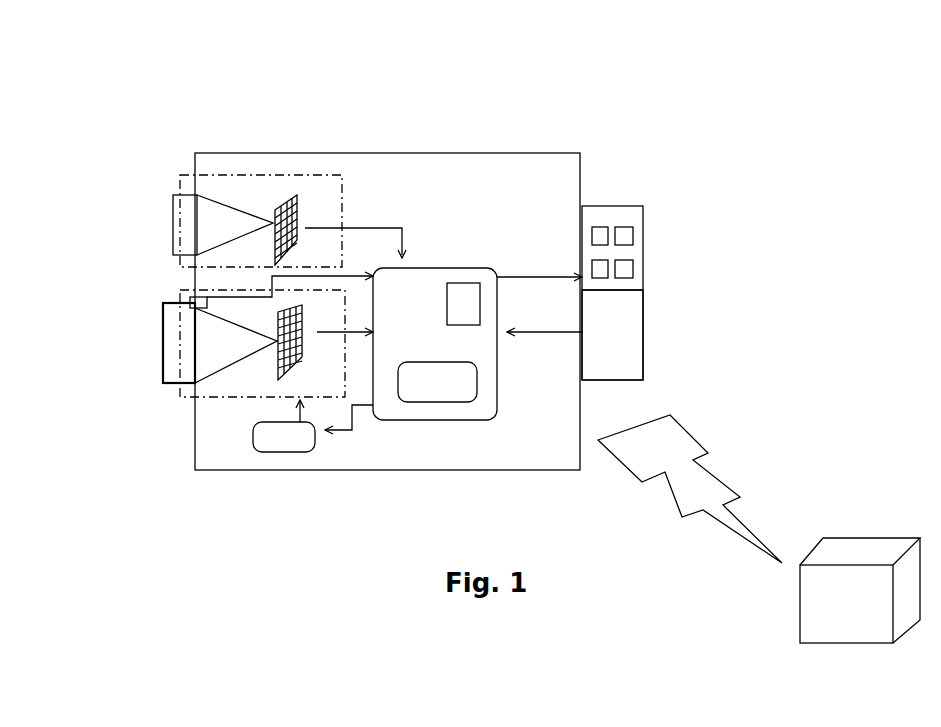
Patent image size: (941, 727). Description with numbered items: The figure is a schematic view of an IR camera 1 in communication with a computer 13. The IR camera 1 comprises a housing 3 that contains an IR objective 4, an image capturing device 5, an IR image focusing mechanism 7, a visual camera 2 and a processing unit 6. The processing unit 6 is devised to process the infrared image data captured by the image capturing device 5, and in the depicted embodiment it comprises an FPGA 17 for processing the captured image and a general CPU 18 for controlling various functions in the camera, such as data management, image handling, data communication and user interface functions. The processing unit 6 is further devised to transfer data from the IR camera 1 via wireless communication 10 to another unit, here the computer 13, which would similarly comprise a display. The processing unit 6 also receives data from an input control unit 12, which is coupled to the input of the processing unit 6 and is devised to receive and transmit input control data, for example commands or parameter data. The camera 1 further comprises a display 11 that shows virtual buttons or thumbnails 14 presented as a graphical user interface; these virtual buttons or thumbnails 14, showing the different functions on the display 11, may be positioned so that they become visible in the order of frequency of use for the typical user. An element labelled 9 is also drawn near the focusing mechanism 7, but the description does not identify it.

The IR camera 1 is at (126, 72).
The visual camera 2 is at (280, 175).
The housing 3 is at (546, 151).
The IR objective 4 is at (180, 362).
The image capturing device 5 is at (300, 345).
The processing unit 6 is at (487, 300).
The IR image focusing mechanism 7 is at (228, 398).
The power supply 9 is at (275, 445).
The wireless communication 10 is at (686, 520).
The display 11 is at (645, 245).
The input control unit 12 is at (645, 338).
The computer 13 is at (877, 545).
The virtual buttons or thumbnails 14 is at (600, 210).
The FPGA 17 is at (477, 390).
The general CPU 18 is at (462, 283).